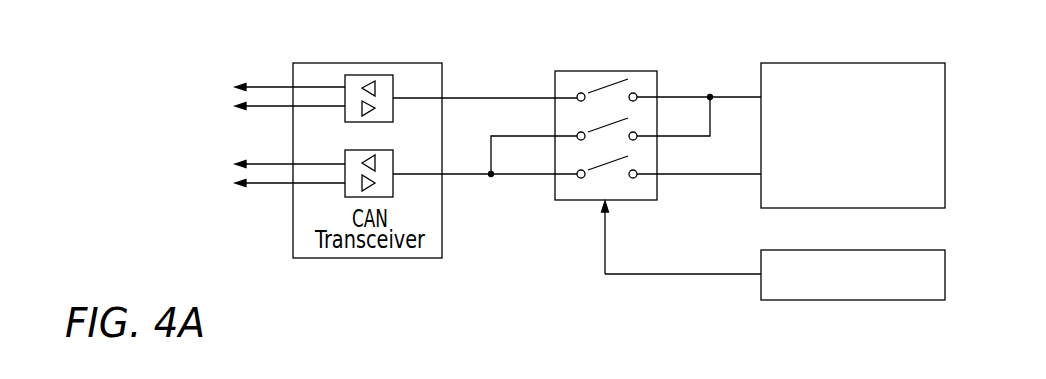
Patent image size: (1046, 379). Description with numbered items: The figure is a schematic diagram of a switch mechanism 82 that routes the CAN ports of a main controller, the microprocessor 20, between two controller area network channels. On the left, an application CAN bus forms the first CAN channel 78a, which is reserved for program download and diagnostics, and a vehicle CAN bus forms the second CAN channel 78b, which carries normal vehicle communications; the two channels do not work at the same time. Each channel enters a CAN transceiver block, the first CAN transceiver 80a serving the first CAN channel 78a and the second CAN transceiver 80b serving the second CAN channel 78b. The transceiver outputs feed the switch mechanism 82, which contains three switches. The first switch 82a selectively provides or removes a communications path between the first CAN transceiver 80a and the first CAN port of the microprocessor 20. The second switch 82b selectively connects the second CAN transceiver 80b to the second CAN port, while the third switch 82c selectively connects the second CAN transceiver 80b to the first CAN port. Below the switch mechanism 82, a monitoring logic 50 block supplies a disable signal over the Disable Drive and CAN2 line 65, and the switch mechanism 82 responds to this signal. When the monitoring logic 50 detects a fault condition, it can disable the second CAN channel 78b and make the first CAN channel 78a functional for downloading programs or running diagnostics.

The microprocessor 20 is at (882, 63).
The monitoring logic 50 is at (872, 300).
The Disable Drive and CAN2 line 65 is at (692, 275).
The first CAN channel 78a is at (268, 68).
The second CAN channel 78b is at (262, 200).
The first CAN transceiver 80a is at (394, 86).
The second CAN transceiver 80b is at (393, 191).
The switch mechanism 82 is at (610, 144).
The first switch 82a is at (593, 82).
The second switch 82b is at (622, 178).
The third switch 82c is at (641, 122).